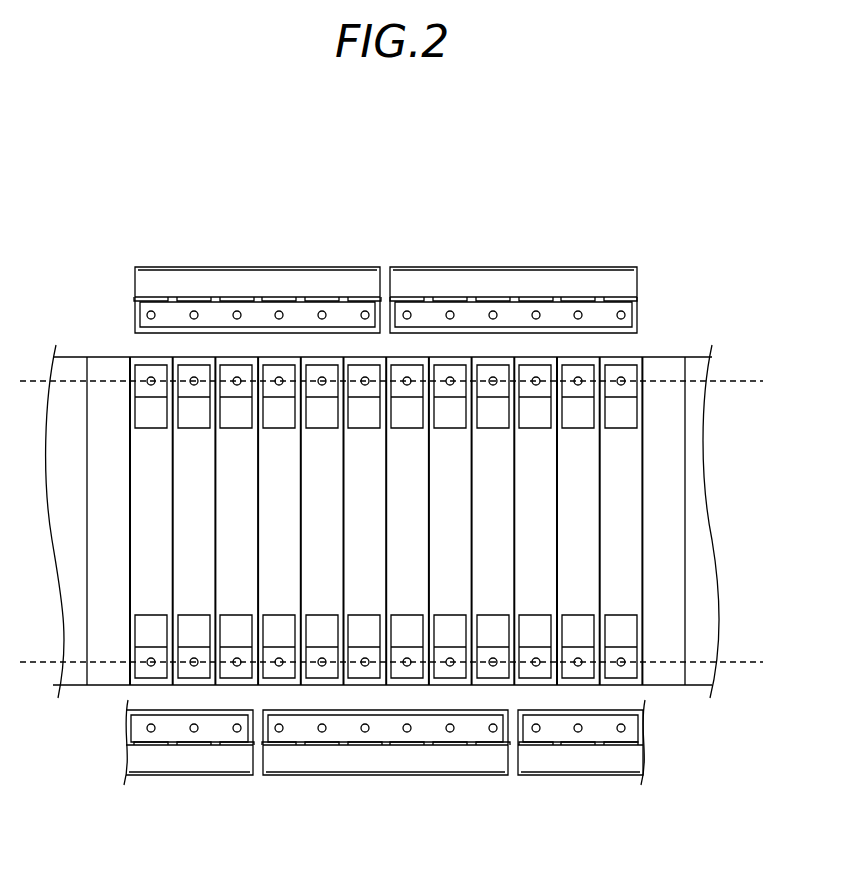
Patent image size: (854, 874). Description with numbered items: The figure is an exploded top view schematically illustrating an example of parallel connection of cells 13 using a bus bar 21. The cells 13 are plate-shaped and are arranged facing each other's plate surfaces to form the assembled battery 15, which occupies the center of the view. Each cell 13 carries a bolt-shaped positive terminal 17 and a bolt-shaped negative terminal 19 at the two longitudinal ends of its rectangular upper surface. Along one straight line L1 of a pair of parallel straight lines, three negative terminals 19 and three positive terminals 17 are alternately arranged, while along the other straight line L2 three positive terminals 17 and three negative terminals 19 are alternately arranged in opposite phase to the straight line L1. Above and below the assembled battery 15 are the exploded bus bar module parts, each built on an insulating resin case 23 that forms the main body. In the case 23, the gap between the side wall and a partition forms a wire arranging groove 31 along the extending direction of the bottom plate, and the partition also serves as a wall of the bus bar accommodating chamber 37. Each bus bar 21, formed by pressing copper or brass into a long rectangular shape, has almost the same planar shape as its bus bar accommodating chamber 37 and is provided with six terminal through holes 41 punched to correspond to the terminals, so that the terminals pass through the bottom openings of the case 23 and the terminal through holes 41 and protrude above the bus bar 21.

The cell 13 is at (575, 493).
The assembled battery 15 is at (647, 349).
The positive terminal 17 is at (151, 385).
The negative terminal 19 is at (279, 385).
The bus bar 21 is at (218, 302).
The case 23 is at (176, 265).
The wire arranging groove 31 is at (249, 288).
The bus bar accommodating chamber 37 is at (268, 320).
The terminal through hole 41 is at (323, 311).
The straight line L1 is at (728, 383).
The straight line L2 is at (740, 663).